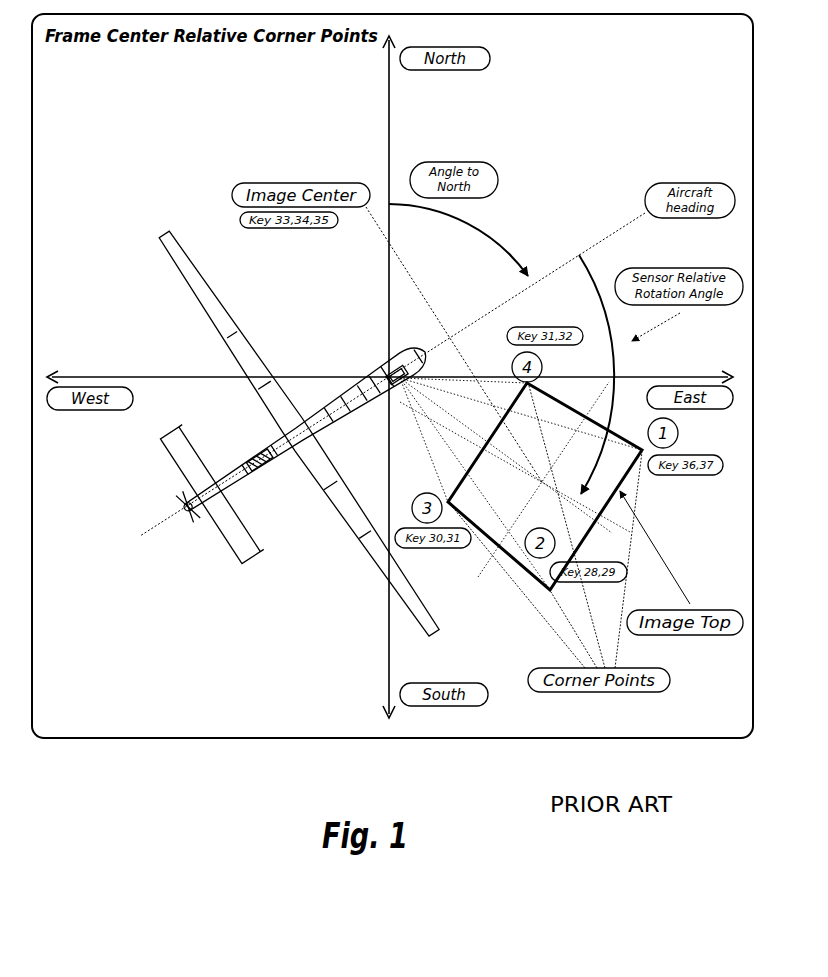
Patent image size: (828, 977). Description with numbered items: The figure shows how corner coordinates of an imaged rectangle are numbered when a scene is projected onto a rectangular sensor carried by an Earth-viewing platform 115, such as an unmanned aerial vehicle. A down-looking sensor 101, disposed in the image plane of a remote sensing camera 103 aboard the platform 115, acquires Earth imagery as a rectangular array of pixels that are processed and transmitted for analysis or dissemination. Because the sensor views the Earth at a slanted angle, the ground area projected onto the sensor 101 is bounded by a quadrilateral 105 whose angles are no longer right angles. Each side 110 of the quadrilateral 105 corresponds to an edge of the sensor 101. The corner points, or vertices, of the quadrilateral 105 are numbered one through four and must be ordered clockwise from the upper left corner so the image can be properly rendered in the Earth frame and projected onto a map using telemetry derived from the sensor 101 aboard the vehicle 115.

The sensor 101 is at (403, 350).
The remote sensing camera 103 is at (380, 367).
The quadrilateral 105 is at (538, 470).
The side 110 is at (620, 477).
The Earth-viewing platform 115 is at (347, 387).